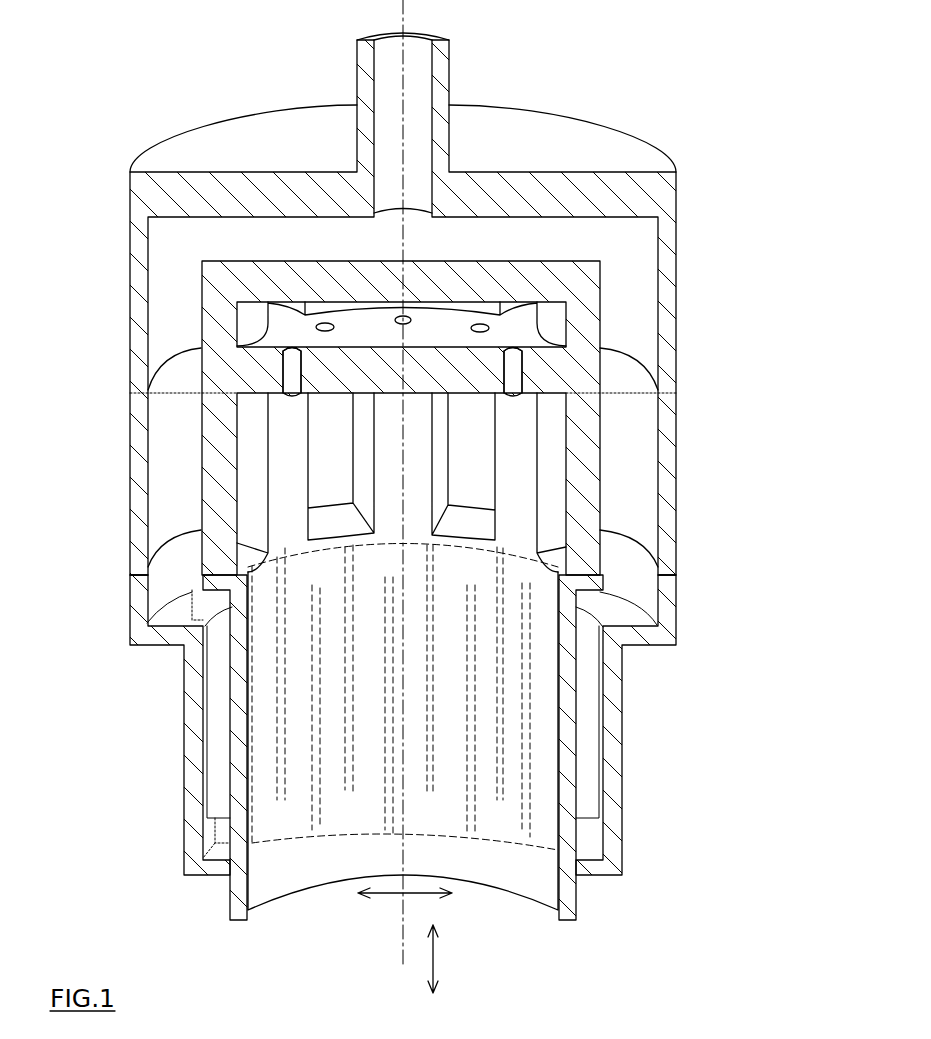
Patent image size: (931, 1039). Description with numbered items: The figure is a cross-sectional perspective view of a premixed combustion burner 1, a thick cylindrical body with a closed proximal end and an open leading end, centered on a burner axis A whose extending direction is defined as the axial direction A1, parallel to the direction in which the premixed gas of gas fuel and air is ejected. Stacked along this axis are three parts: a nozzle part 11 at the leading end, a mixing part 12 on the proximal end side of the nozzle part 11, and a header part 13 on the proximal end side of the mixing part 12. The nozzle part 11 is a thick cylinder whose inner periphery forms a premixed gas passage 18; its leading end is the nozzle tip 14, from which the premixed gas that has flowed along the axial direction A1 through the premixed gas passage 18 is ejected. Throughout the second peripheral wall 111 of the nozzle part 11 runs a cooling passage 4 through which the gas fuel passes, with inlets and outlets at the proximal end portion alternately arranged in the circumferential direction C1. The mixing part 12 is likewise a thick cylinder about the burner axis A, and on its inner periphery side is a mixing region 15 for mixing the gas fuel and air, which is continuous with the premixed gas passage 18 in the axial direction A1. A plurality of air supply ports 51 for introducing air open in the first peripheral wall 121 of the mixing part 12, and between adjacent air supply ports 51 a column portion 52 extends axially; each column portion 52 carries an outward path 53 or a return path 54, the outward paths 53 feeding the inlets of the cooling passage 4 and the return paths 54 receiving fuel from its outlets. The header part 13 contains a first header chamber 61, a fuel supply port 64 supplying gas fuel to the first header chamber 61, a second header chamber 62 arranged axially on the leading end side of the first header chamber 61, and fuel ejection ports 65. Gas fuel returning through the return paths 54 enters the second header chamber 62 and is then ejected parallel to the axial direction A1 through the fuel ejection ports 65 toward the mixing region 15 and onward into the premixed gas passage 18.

The premixed combustion burner 1 is at (699, 70).
The cooling passage 4 is at (602, 710).
The nozzle part 11 is at (184, 722).
The second peripheral wall 111 is at (184, 812).
The mixing part 12 is at (130, 470).
The first peripheral wall 121 is at (130, 530).
The header part 13 is at (130, 260).
The nozzle tip 14 is at (247, 920).
The mixing region 15 is at (431, 523).
The premixed gas passage 18 is at (341, 858).
The air supply ports 51 is at (495, 467).
The column portion 52 is at (520, 440).
The outward path 53 is at (160, 435).
The return path 54 is at (570, 348).
The first header chamber 61 is at (242, 235).
The second header chamber 62 is at (447, 325).
The fuel supply port 64 is at (415, 210).
The fuel ejection ports 65 is at (325, 322).
The burner axis A is at (403, 958).
The axial direction A1 is at (433, 968).
The circumferential direction C1 is at (415, 893).